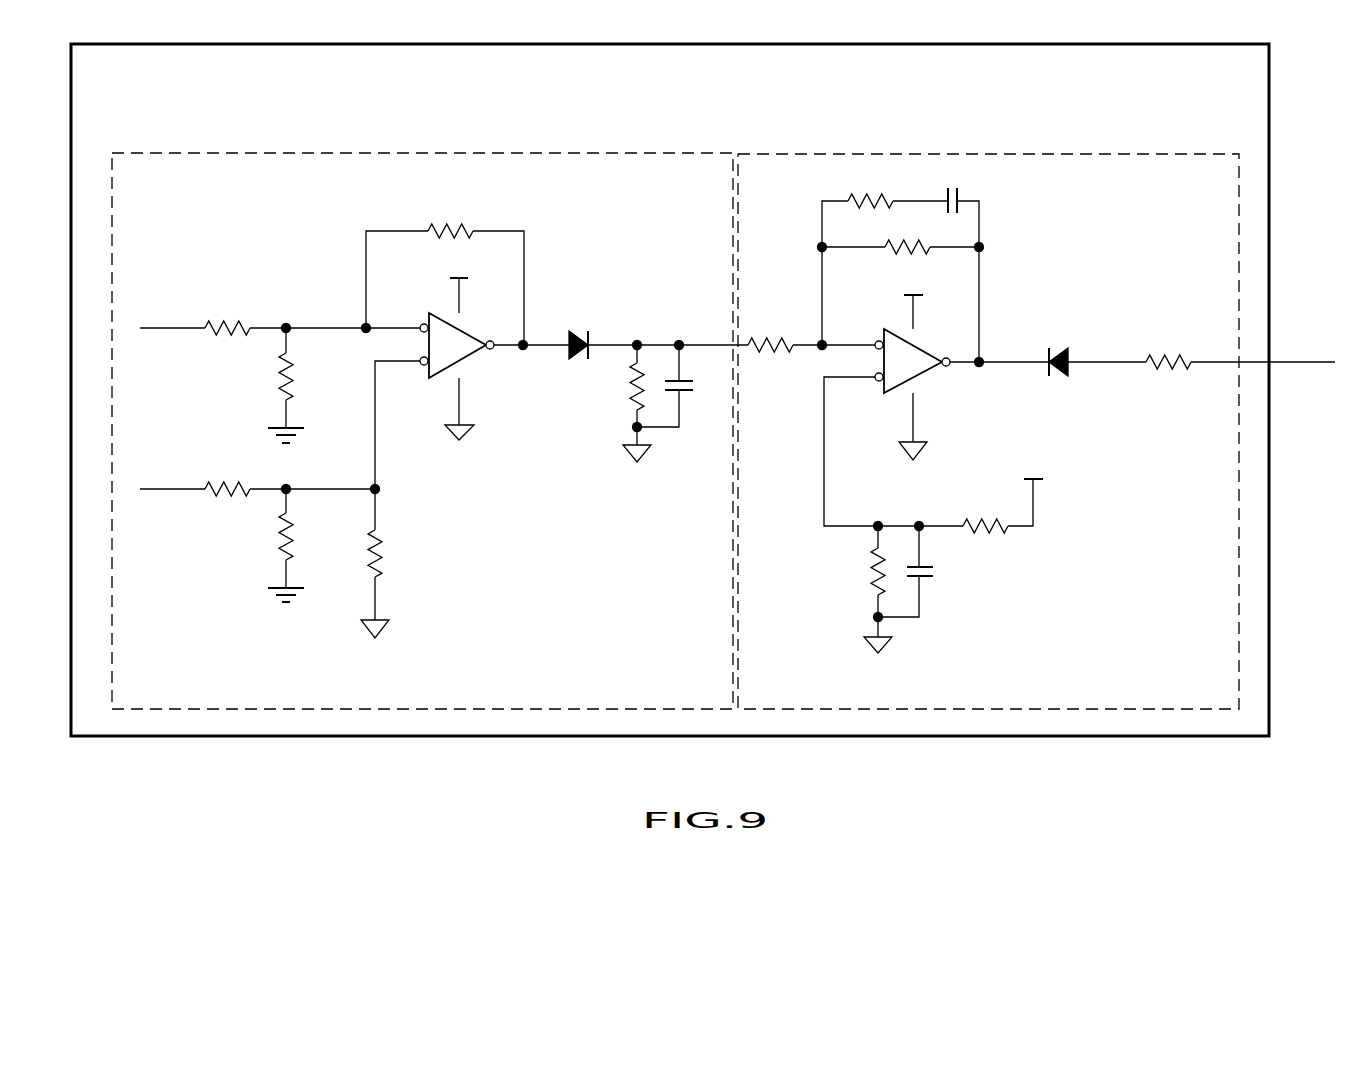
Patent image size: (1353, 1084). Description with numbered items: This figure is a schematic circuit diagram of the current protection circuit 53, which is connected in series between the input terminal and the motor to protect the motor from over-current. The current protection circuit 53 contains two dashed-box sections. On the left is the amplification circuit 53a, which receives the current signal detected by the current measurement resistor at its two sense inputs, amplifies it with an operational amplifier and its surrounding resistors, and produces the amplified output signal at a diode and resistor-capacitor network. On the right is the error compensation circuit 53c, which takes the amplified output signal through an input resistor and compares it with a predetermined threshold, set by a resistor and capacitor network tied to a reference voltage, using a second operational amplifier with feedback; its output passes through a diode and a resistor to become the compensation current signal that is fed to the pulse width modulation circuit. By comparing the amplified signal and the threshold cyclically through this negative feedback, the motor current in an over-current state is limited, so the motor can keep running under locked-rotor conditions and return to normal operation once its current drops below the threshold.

The current protection circuit 53 is at (873, 114).
The amplification circuit 53a is at (640, 637).
The error compensation circuit 53c is at (1156, 680).